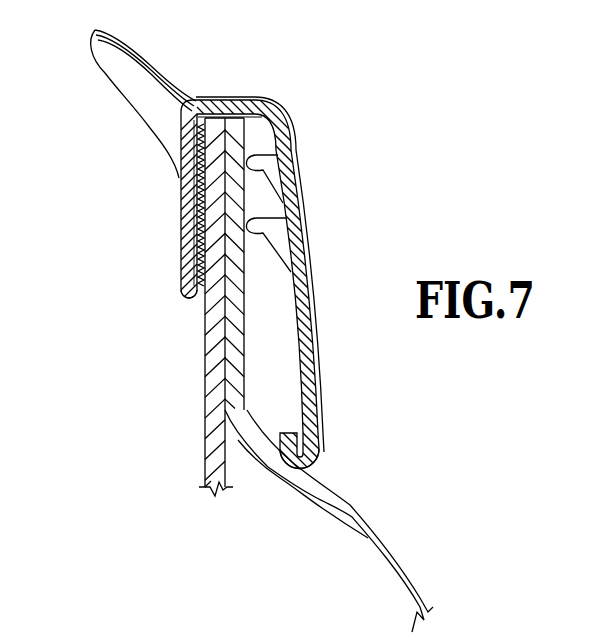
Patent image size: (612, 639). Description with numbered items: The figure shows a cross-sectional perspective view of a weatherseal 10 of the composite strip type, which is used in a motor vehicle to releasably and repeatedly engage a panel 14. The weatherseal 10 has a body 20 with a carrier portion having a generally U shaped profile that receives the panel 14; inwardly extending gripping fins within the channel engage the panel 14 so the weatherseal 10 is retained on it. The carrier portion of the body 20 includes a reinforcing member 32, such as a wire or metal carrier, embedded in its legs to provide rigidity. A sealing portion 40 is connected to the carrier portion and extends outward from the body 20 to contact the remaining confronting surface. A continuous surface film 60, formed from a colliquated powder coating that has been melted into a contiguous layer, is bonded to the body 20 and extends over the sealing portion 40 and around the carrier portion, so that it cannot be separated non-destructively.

The weatherseal 10 is at (320, 130).
The panel 14 is at (222, 400).
The body 20 is at (172, 172).
The reinforcing member 32 is at (184, 292).
The sealing portion 40 is at (136, 90).
The surface film 60 is at (142, 66).